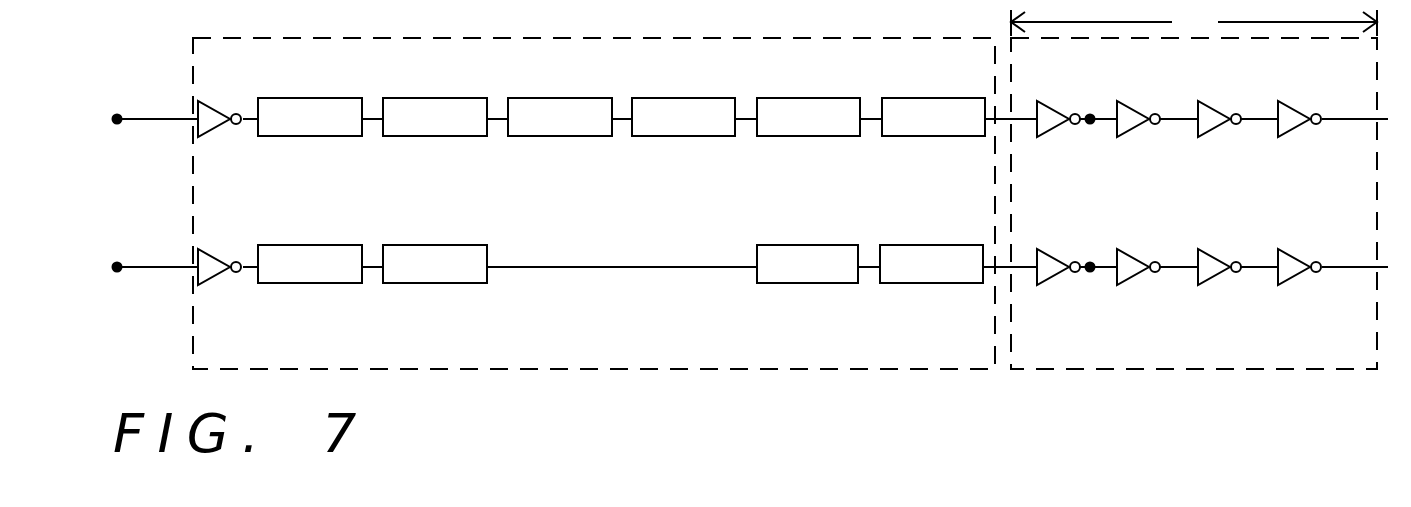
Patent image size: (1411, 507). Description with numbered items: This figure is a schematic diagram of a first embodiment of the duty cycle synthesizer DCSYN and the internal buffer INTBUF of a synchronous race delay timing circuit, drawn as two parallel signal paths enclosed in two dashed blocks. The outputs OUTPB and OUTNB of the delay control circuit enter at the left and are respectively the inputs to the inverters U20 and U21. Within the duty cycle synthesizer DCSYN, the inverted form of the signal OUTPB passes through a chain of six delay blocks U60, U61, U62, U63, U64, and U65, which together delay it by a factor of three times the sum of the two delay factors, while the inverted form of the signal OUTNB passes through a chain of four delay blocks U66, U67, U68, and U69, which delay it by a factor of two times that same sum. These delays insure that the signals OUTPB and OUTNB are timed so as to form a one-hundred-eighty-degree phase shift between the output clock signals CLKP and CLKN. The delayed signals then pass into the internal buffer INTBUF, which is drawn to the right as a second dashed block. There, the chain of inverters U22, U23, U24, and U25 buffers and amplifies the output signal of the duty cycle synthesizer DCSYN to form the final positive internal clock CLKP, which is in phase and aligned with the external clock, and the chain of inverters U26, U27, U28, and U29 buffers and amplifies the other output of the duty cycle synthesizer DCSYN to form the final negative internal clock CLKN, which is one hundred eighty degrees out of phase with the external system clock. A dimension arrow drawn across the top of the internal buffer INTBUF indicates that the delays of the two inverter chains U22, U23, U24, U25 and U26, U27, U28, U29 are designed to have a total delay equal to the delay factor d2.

The inverter U20 is at (228, 140).
The inverter U21 is at (228, 287).
The inverter U22 is at (1051, 138).
The inverter U23 is at (1143, 138).
The inverter U24 is at (1219, 138).
The inverter U25 is at (1298, 138).
The inverter U26 is at (1049, 286).
The inverter U27 is at (1143, 286).
The inverter U28 is at (1219, 286).
The inverter U29 is at (1298, 286).
The delay block U60 is at (310, 138).
The delay block U61 is at (435, 138).
The delay block U62 is at (560, 138).
The delay block U63 is at (683, 138).
The delay block U64 is at (808, 138).
The delay block U65 is at (933, 138).
The delay block U66 is at (310, 285).
The delay block U67 is at (435, 285).
The delay block U68 is at (807, 285).
The delay block U69 is at (931, 285).
The duty cycle synthesizer DCSYN is at (735, 372).
The internal buffer INTBUF is at (1320, 372).
The output of the delay control circuit OUTPB is at (151, 102).
The output of the delay control circuit OUTNB is at (151, 249).
The positive internal clock CLKP is at (1353, 117).
The negative internal clock CLKN is at (1353, 265).
The delay factor d2 is at (1194, 21).